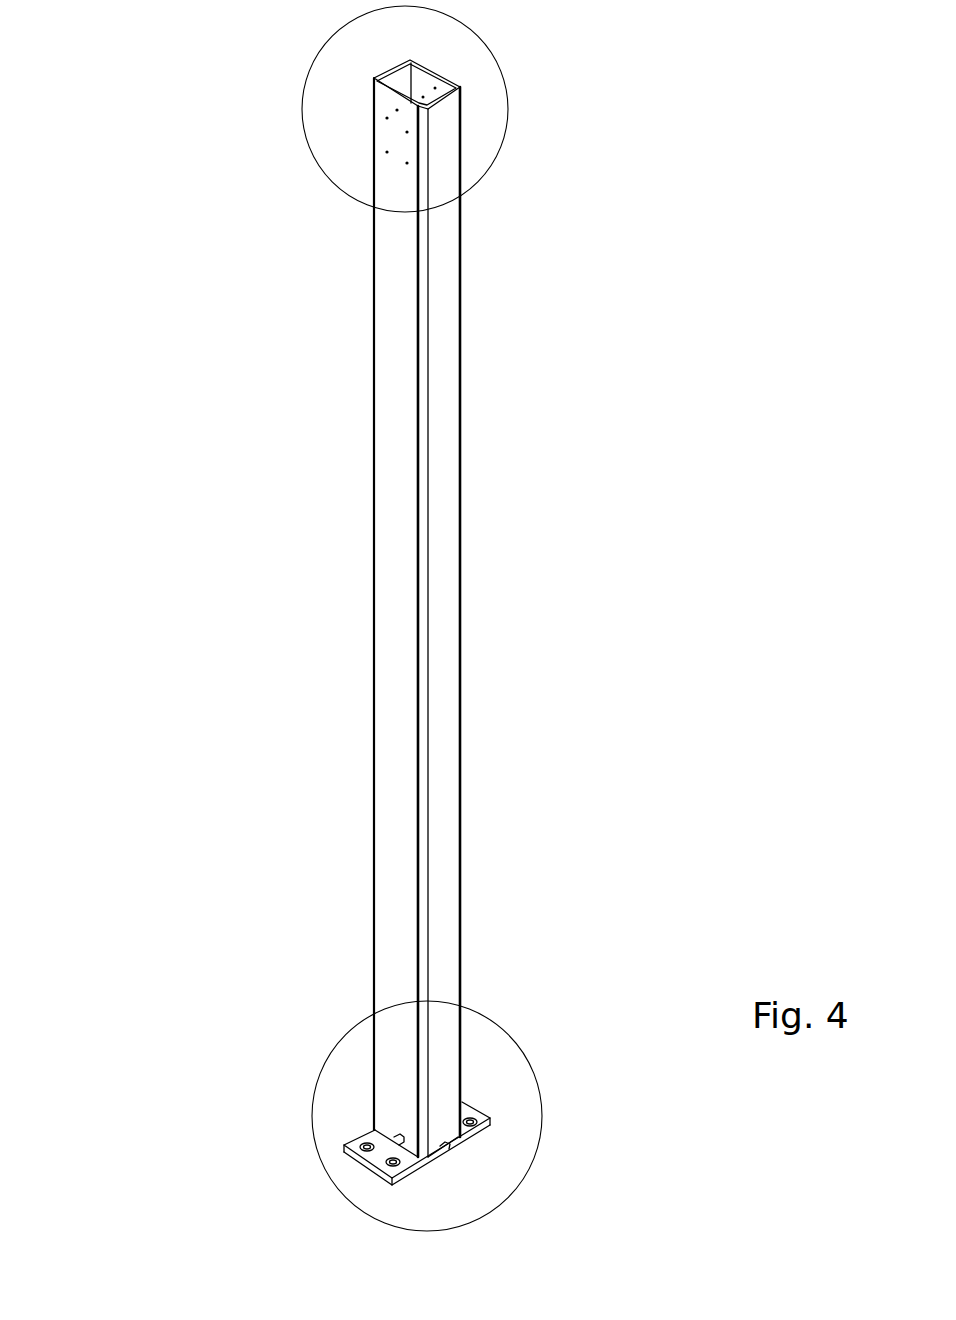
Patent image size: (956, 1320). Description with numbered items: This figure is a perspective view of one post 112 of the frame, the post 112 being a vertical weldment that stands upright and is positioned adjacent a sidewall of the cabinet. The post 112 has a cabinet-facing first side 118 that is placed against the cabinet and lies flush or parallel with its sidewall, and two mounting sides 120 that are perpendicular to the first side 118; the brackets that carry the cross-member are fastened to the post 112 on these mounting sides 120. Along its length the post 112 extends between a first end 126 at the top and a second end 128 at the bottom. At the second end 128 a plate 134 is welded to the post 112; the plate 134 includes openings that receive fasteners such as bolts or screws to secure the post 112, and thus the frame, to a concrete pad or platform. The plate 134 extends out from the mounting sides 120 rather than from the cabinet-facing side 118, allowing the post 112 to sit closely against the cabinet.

The post 112 is at (116, 308).
The side 118 is at (440, 523).
The mounting side 120 is at (397, 363).
The first end 126 is at (510, 67).
The second end 128 is at (455, 1037).
The plate 134 is at (348, 1129).